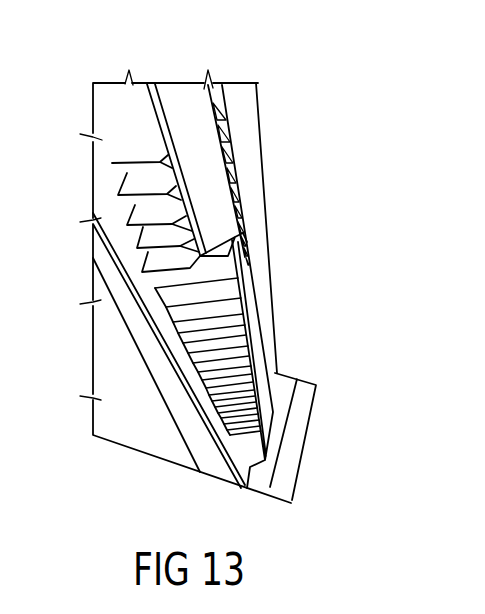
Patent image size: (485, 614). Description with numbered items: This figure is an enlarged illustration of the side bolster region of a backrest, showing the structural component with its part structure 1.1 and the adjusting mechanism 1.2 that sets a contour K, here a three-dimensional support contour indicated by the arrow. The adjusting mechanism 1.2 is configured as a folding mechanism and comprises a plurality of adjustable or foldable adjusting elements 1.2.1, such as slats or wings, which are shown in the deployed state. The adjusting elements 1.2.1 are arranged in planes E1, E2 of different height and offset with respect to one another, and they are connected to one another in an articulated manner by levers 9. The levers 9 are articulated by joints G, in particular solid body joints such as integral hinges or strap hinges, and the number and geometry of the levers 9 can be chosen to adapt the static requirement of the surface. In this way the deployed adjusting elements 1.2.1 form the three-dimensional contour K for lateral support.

The adjusting mechanism 1.2 is at (122, 116).
The lever 9 is at (112, 163).
The joint G is at (162, 127).
The plane E2 is at (165, 121).
The contour K is at (282, 155).
The part structure 1.1 is at (238, 182).
The adjusting element 1.2.1 is at (190, 224).
The plane E1 is at (250, 341).